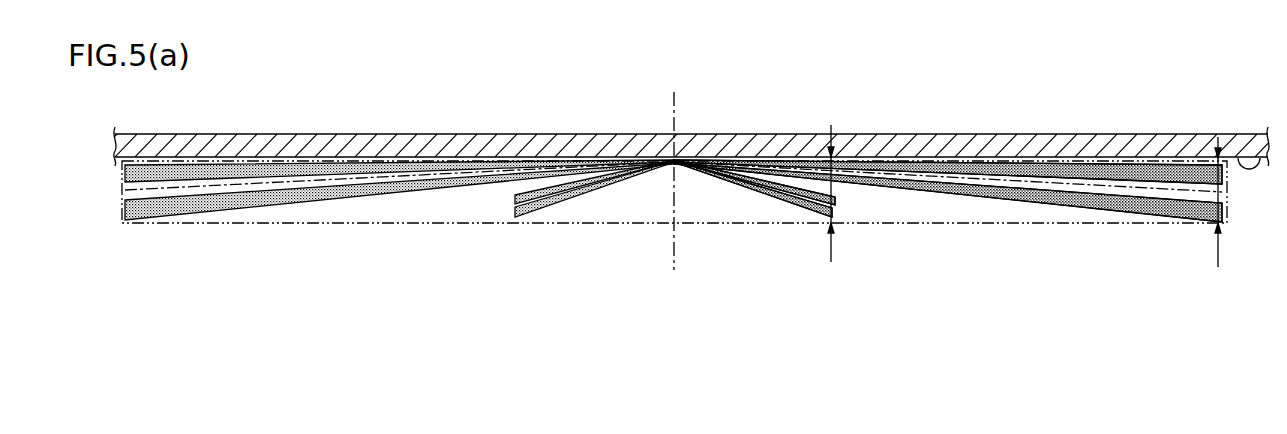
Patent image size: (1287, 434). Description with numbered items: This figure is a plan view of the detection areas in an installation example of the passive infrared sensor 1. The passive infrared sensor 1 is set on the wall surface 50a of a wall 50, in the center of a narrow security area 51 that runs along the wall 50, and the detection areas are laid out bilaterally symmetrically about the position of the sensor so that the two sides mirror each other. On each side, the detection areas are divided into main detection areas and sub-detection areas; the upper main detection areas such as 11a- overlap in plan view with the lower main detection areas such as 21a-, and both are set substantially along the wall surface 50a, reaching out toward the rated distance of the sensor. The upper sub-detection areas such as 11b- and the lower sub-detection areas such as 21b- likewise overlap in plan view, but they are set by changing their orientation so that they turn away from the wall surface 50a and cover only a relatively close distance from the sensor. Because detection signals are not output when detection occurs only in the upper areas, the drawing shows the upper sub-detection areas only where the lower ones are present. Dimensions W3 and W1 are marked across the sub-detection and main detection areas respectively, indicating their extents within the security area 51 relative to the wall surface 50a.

The passive infrared sensor 1 is at (673, 163).
The wall 50 is at (1146, 134).
The wall surface 50a is at (1254, 137).
The security area 51 is at (447, 212).
The main detection area 11a- is at (1113, 170).
The main detection area 21a- is at (948, 233).
The sub-detection area 11b- is at (768, 190).
The sub-detection area 21b- is at (754, 241).
The width dimension W3 is at (858, 197).
The width dimension W1 is at (1241, 211).